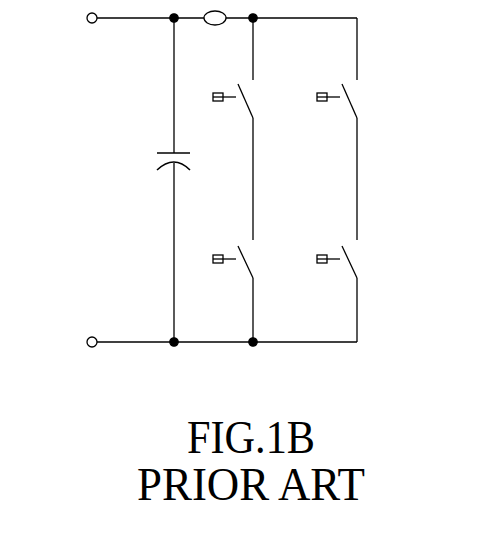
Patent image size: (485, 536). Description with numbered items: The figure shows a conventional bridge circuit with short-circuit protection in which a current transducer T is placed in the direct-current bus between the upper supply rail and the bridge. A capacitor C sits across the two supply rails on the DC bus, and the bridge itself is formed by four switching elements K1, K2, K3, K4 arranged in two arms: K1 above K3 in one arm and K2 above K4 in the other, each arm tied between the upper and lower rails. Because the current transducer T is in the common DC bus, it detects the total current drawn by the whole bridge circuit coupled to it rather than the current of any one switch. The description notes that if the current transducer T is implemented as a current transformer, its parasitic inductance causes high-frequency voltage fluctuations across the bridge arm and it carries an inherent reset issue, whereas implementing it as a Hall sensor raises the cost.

The current transducer T is at (215, 37).
The capacitor C is at (160, 160).
The relay switch K1 is at (231, 112).
The relay switch K2 is at (335, 112).
The relay switch K3 is at (231, 273).
The relay switch K4 is at (335, 273).